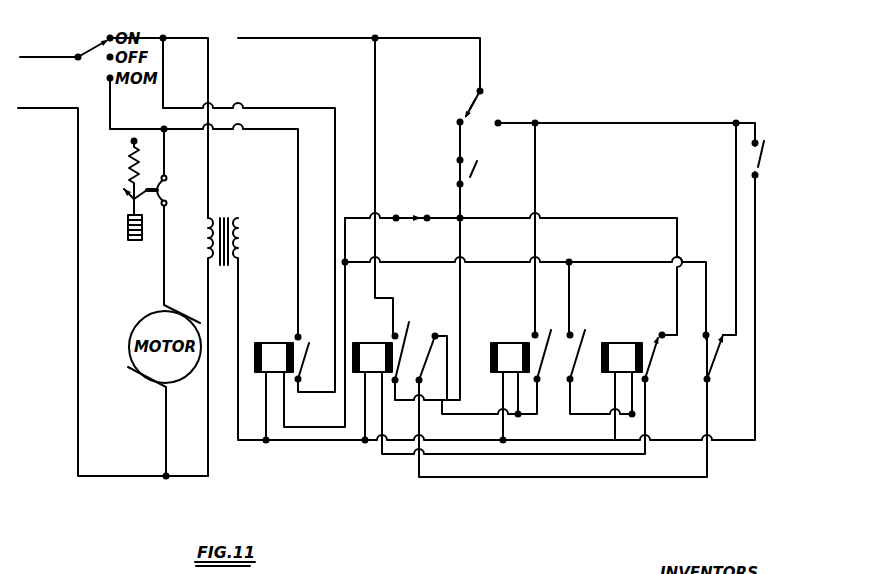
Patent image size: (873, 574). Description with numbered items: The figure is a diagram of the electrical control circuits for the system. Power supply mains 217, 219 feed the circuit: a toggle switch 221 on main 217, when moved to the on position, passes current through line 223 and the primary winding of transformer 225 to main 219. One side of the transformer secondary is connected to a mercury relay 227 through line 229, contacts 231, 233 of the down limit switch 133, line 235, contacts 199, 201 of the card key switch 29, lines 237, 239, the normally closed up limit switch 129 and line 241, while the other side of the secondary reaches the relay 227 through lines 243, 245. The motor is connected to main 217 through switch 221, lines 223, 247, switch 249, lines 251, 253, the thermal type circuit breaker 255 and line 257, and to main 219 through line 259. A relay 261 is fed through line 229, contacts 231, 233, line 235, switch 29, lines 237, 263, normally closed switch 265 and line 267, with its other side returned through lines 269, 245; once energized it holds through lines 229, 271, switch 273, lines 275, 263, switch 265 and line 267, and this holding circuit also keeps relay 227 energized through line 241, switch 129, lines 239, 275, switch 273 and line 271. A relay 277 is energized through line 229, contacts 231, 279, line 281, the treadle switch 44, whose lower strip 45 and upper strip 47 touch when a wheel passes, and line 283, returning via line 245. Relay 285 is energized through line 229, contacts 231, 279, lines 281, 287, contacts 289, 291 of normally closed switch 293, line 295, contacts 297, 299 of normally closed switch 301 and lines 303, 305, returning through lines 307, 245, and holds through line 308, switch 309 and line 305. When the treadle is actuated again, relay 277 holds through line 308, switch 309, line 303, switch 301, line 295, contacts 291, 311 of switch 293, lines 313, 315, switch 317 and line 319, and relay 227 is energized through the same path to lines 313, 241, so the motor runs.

The power supply main 217 is at (56, 56).
The toggle switch 221 is at (92, 48).
The line 223 is at (164, 36).
The power supply main 219 is at (42, 107).
The line 247 is at (163, 98).
The line 251 is at (296, 183).
The line 253 is at (166, 175).
The thermal type circuit breaker 255 is at (123, 185).
The line 257 is at (163, 270).
The line 259 is at (163, 441).
The transformer 225 is at (203, 240).
The line 229 is at (318, 37).
The line 271 is at (373, 63).
The contact 231 is at (476, 93).
The down limit switch 133 is at (470, 110).
The contact 233 is at (457, 122).
The line 235 is at (458, 140).
The contact 199 is at (457, 160).
The card key switch 29 is at (480, 169).
The contact 201 is at (463, 184).
The line 237 is at (463, 200).
The line 263 is at (606, 218).
The up limit switch 129 is at (398, 216).
The line 239 is at (448, 222).
The line 241 is at (352, 217).
The line 313 is at (620, 262).
The line 275 is at (462, 285).
The contact 279 is at (499, 121).
The line 281 is at (580, 122).
The line 308 is at (537, 178).
The line 287 is at (734, 198).
The lower strip 45 is at (757, 143).
The treadle switch 44 is at (765, 158).
The upper strip 47 is at (757, 177).
The line 283 is at (755, 400).
The line 245 is at (241, 305).
The switch 249 is at (309, 340).
The mercury relay 227 is at (270, 343).
The line 243 is at (263, 443).
The relay 261 is at (370, 343).
The line 269 is at (362, 443).
The switch 273 is at (406, 322).
The normally closed switch 301 is at (427, 343).
The contact 299 is at (437, 333).
The contact 297 is at (410, 402).
The line 303 is at (480, 418).
The line 305 is at (502, 386).
The relay 285 is at (507, 343).
The line 307 is at (504, 438).
The switch 309 is at (550, 328).
The line 315 is at (572, 290).
The switch 317 is at (584, 328).
The line 319 is at (572, 414).
The relay 277 is at (622, 343).
The normally closed switch 265 is at (655, 333).
The line 267 is at (612, 456).
The contact 311 is at (704, 340).
The contact 289 is at (724, 334).
The normally closed switch 293 is at (712, 352).
The contact 291 is at (704, 380).
The line 295 is at (710, 478).